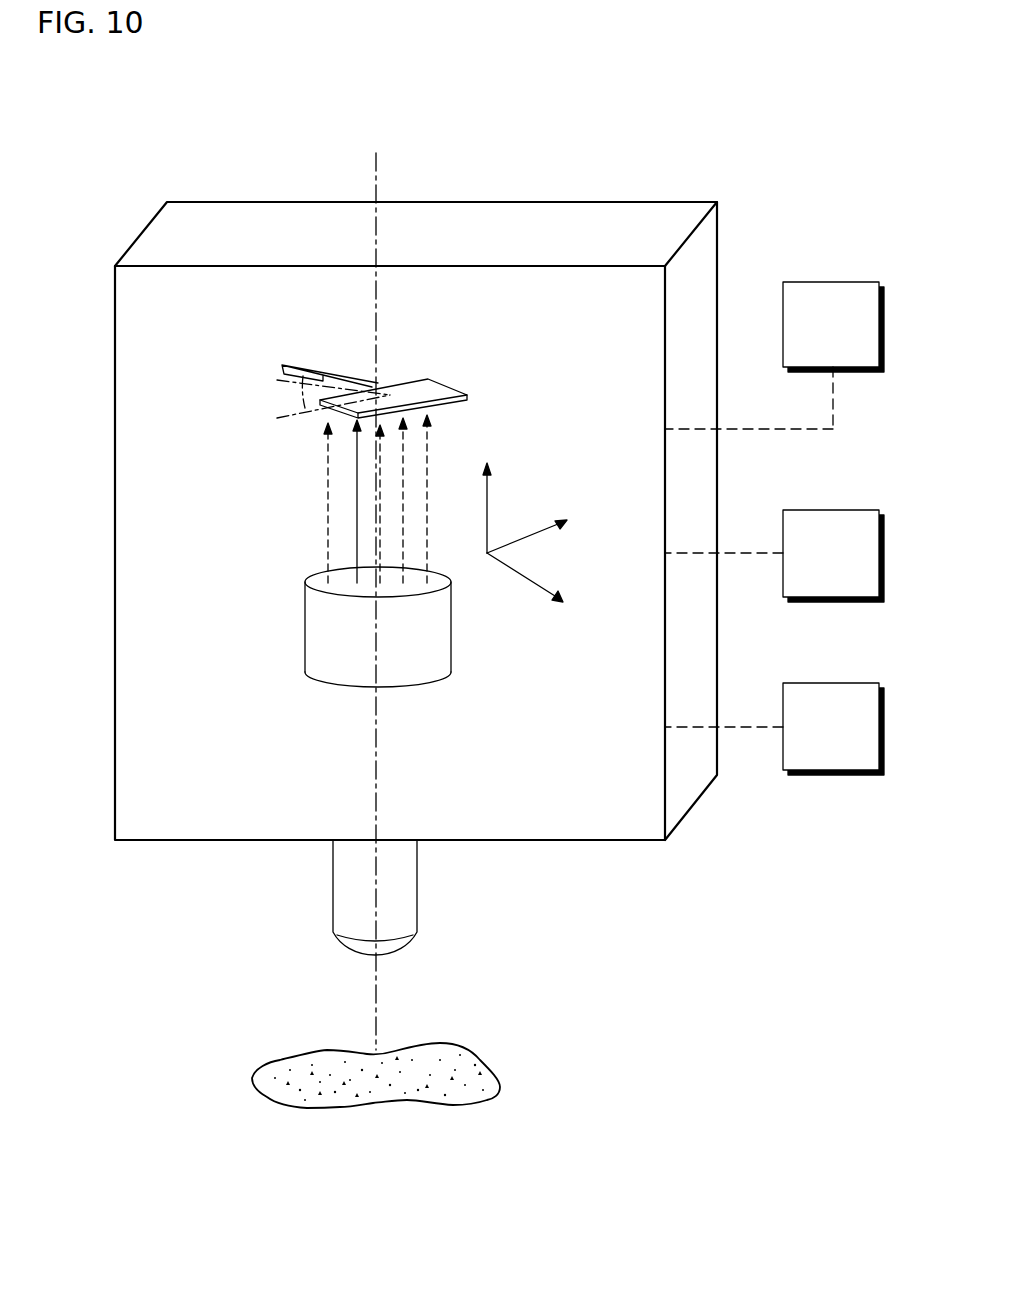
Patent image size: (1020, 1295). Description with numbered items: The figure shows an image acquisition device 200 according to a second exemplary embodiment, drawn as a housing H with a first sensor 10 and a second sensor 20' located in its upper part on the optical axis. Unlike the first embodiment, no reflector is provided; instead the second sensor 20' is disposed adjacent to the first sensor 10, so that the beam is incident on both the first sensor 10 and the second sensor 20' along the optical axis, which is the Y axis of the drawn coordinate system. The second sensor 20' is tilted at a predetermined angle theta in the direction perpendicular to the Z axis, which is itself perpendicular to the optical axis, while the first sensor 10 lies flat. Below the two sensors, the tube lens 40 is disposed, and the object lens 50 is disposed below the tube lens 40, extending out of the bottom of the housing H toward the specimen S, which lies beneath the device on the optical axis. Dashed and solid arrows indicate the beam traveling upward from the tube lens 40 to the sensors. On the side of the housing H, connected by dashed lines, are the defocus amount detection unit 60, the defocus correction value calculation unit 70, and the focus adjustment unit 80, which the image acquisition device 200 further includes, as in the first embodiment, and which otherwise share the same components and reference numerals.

The image acquisition device 200 is at (663, 119).
The housing H is at (717, 253).
The first sensor 10 is at (415, 391).
The second sensor 20' is at (314, 255).
The tube lens 40 is at (317, 630).
The object lens 50 is at (412, 902).
The sample / workpiece S is at (470, 1057).
The defocus amount detection unit 60 is at (774, 355).
The defocus correction value calculation unit 70 is at (774, 556).
The focus adjustment unit 80 is at (774, 729).